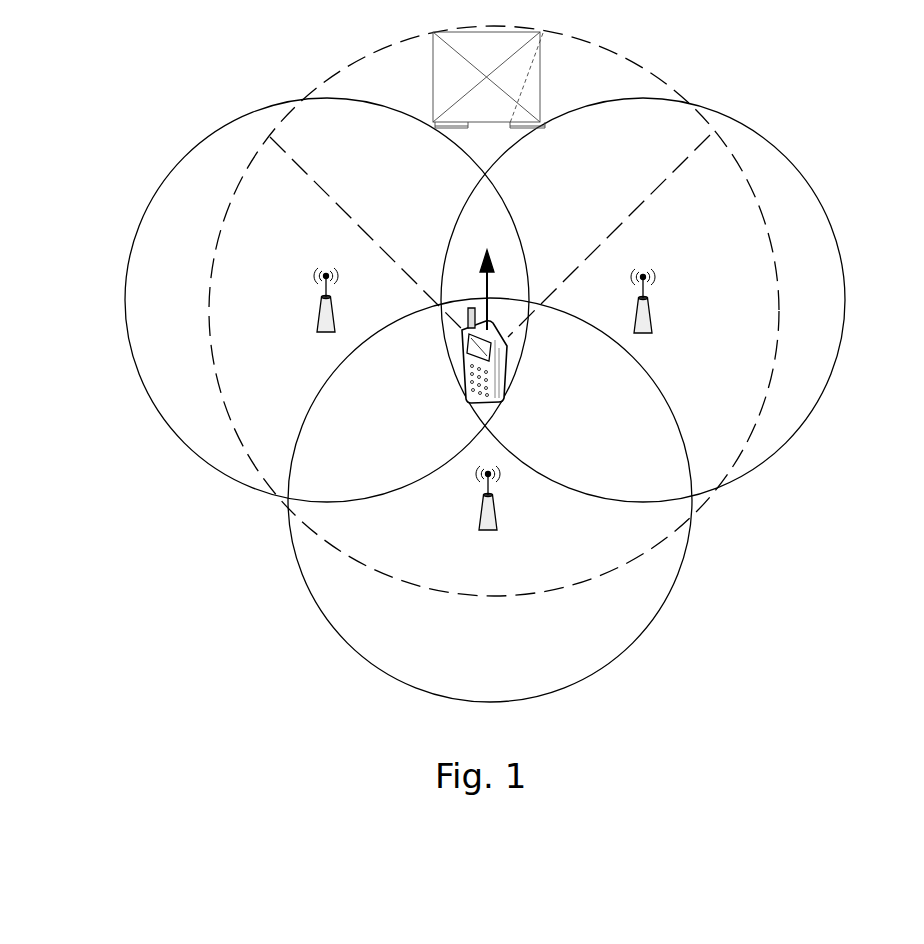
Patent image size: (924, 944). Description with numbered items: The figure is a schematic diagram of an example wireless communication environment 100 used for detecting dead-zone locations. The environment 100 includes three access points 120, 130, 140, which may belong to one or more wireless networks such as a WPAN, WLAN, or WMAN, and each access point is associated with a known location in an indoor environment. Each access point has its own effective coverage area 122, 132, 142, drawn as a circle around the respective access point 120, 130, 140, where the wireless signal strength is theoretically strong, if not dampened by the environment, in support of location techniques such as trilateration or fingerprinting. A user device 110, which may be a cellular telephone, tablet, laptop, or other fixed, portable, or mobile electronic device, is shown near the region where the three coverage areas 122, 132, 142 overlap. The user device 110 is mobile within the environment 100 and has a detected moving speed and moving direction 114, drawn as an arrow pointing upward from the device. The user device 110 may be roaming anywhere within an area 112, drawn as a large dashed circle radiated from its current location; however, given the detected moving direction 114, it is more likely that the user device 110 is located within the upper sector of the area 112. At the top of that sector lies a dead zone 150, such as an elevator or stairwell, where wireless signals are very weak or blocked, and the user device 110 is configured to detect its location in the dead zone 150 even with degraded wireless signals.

The wireless communication environment 100 is at (199, 62).
The user device 110 is at (464, 380).
The area 112 is at (333, 77).
The moving direction 114 is at (480, 262).
The access point 120 is at (317, 326).
The effective coverage area 122 is at (124, 306).
The access point 130 is at (634, 321).
The effective coverage area 132 is at (826, 211).
The access point 140 is at (479, 527).
The effective coverage area 142 is at (322, 612).
The dead zone 150 is at (433, 98).